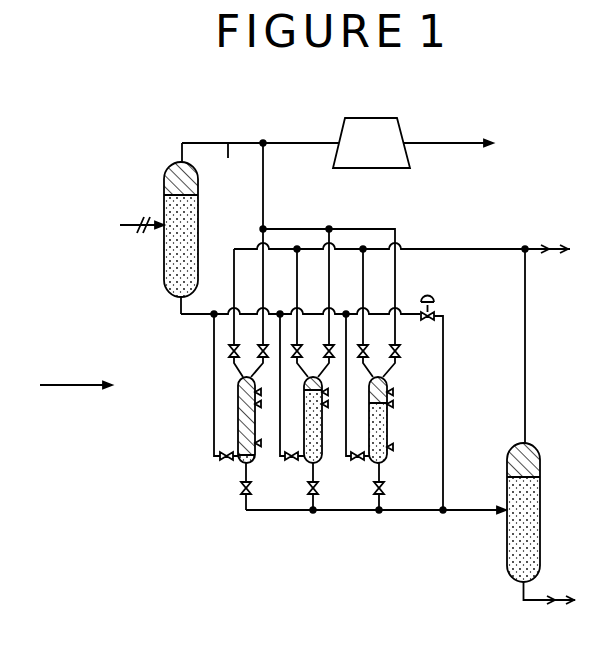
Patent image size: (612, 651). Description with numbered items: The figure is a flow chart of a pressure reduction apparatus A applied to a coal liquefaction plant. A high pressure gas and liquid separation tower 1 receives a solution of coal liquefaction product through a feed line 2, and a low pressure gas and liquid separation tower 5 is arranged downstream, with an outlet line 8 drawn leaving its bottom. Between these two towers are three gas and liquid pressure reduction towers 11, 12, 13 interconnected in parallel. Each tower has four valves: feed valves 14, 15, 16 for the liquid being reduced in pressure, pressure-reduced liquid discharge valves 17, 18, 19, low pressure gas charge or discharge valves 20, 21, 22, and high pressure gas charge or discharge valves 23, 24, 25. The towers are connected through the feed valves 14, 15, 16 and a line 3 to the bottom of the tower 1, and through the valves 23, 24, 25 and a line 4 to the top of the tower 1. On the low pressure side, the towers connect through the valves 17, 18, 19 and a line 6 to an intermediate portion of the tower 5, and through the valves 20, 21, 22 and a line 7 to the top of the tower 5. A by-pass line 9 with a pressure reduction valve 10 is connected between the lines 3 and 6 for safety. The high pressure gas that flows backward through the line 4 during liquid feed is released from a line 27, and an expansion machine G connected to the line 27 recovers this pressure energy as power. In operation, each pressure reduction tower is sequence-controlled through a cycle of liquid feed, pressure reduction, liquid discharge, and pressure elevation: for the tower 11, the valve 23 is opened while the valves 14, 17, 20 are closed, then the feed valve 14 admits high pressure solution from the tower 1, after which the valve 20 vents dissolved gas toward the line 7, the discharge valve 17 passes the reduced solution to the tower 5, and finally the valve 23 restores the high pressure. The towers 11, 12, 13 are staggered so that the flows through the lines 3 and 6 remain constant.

The high pressure gas and liquid separation tower 1 is at (165, 270).
The feed line 2 is at (127, 225).
The line 3 is at (181, 315).
The line 4 is at (263, 171).
The low pressure gas and liquid separation tower 5 is at (541, 520).
The line 6 is at (460, 512).
The line 7 is at (525, 368).
The outlet line 8 is at (537, 602).
The by-pass line 9 is at (443, 368).
The pressure reduction valve 10 is at (433, 305).
The gas and liquid pressure reduction tower 11 is at (238, 422).
The gas and liquid pressure reduction tower 12 is at (318, 468).
The gas and liquid pressure reduction tower 13 is at (389, 425).
The feed valve 14 is at (220, 458).
The feed valve 15 is at (283, 458).
The feed valve 16 is at (352, 460).
The pressure-reduced liquid discharge valve 17 is at (246, 493).
The pressure-reduced liquid discharge valve 18 is at (315, 495).
The pressure-reduced liquid discharge valve 19 is at (385, 488).
The low pressure gas charge or discharge valve 20 is at (232, 345).
The low pressure gas charge or discharge valve 21 is at (297, 338).
The low pressure gas charge or discharge valve 22 is at (363, 338).
The high pressure gas charge or discharge valve 23 is at (263, 338).
The high pressure gas charge or discharge valve 24 is at (329, 338).
The high pressure gas charge or discharge valve 25 is at (395, 338).
The line 27 is at (292, 143).
The pressure reduction apparatus A is at (63, 385).
The expansion machine G is at (400, 125).